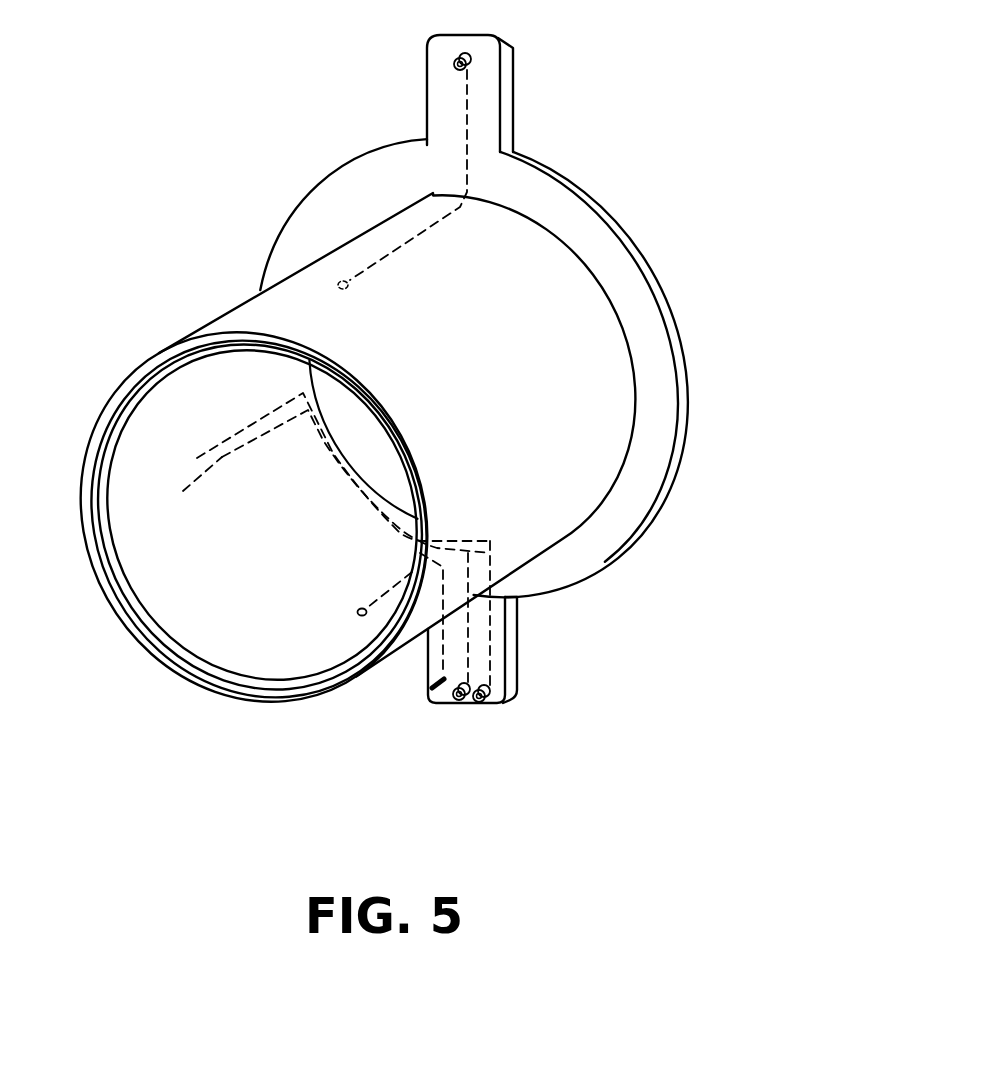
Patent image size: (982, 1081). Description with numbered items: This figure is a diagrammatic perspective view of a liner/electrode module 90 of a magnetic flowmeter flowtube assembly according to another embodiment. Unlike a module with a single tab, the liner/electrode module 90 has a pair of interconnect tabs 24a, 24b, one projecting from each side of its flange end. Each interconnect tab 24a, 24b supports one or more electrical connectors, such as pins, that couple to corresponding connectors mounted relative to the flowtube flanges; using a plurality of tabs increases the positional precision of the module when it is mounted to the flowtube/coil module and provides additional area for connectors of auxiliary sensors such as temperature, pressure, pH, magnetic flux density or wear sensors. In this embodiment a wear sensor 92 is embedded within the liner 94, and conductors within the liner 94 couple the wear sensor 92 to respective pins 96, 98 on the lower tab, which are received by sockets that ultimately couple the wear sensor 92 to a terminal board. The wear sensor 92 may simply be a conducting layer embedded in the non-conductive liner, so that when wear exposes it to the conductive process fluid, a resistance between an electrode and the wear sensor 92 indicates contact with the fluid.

The liner/electrode module 90 is at (716, 141).
The wear sensor 92 is at (195, 458).
The liner 94 is at (145, 550).
The pin 96 is at (458, 703).
The pin 98 is at (482, 705).
The interconnect tab 24a is at (515, 67).
The interconnect tab 24b is at (517, 662).